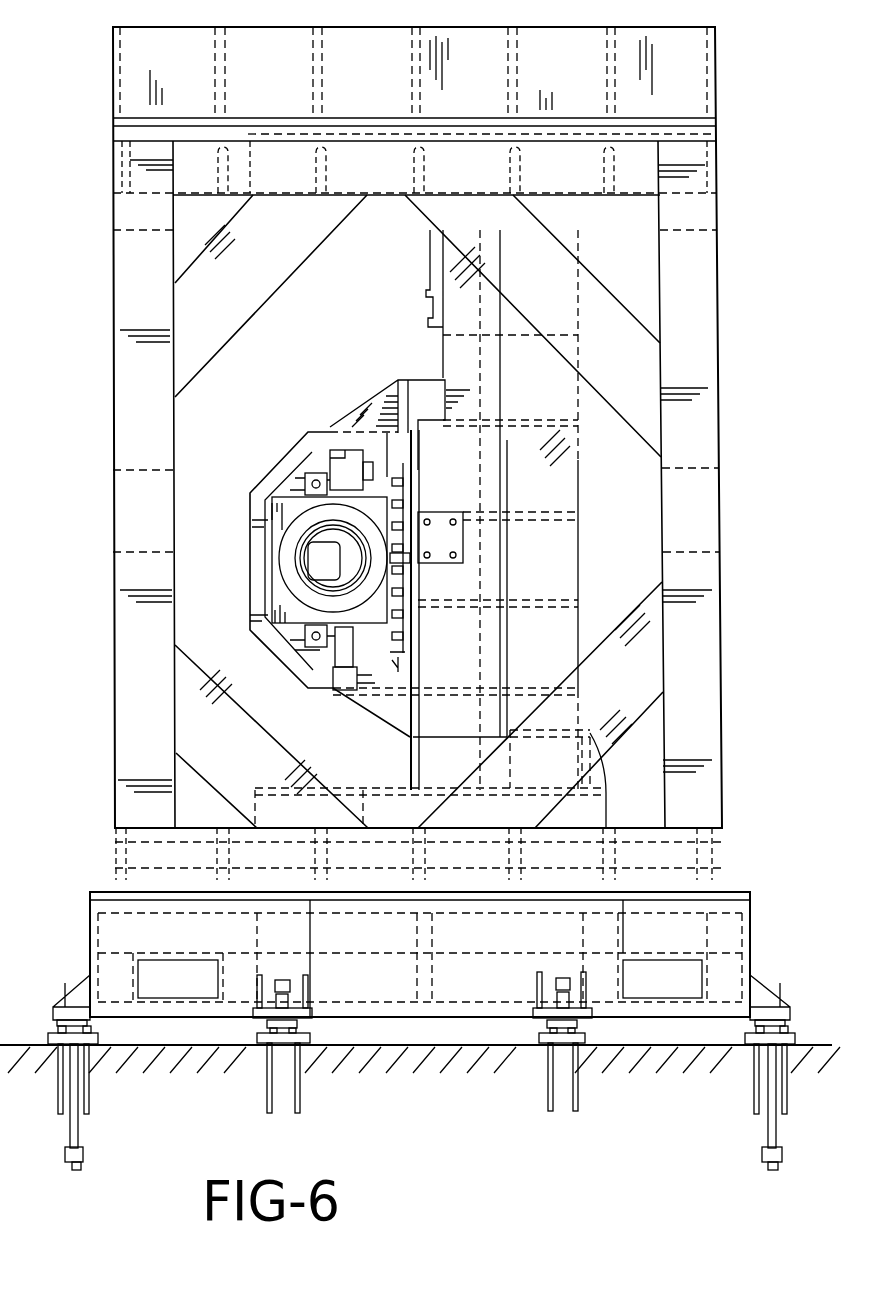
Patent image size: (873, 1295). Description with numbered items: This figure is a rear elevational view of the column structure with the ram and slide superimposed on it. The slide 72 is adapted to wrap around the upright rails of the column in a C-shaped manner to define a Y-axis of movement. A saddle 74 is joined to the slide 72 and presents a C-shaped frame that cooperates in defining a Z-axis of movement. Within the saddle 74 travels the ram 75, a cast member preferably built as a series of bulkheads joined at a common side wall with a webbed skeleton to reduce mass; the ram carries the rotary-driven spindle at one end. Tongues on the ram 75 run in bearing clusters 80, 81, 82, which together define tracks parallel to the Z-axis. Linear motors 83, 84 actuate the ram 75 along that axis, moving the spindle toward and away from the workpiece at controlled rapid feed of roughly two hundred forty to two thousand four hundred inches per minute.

The slide 72 is at (460, 400).
The saddle 74 is at (403, 440).
The ram 75 is at (285, 460).
The bearing cluster 80 is at (344, 442).
The bearing cluster 81 is at (349, 672).
The bearing cluster 82 is at (425, 567).
The linear motor 83 is at (422, 479).
The linear motor 84 is at (413, 611).